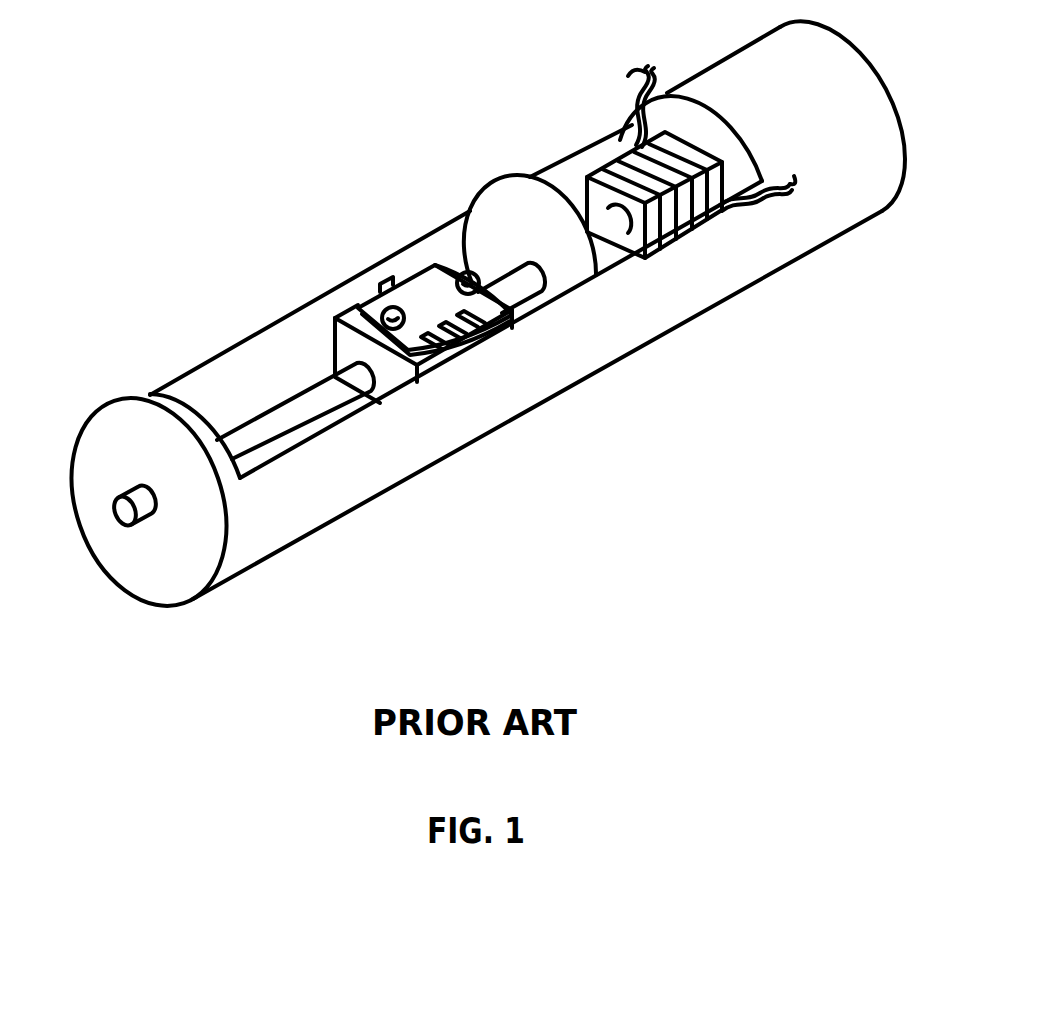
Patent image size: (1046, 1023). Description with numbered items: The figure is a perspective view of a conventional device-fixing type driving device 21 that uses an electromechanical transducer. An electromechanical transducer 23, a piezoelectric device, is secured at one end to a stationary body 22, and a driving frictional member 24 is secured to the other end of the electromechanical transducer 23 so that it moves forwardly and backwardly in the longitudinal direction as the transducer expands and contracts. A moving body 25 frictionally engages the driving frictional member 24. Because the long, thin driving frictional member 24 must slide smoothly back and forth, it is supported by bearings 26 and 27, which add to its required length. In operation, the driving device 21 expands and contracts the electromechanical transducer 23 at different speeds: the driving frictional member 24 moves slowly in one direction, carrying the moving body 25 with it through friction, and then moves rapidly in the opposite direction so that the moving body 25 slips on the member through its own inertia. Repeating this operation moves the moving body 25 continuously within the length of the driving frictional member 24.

The device-fixing type driving device 21 is at (323, 165).
The stationary body 22 is at (771, 65).
The electromechanical transducer 23 is at (627, 153).
The driving frictional member 24 is at (258, 428).
The moving body 25 is at (343, 346).
The bearing 26 is at (541, 181).
The bearing 27 is at (162, 410).